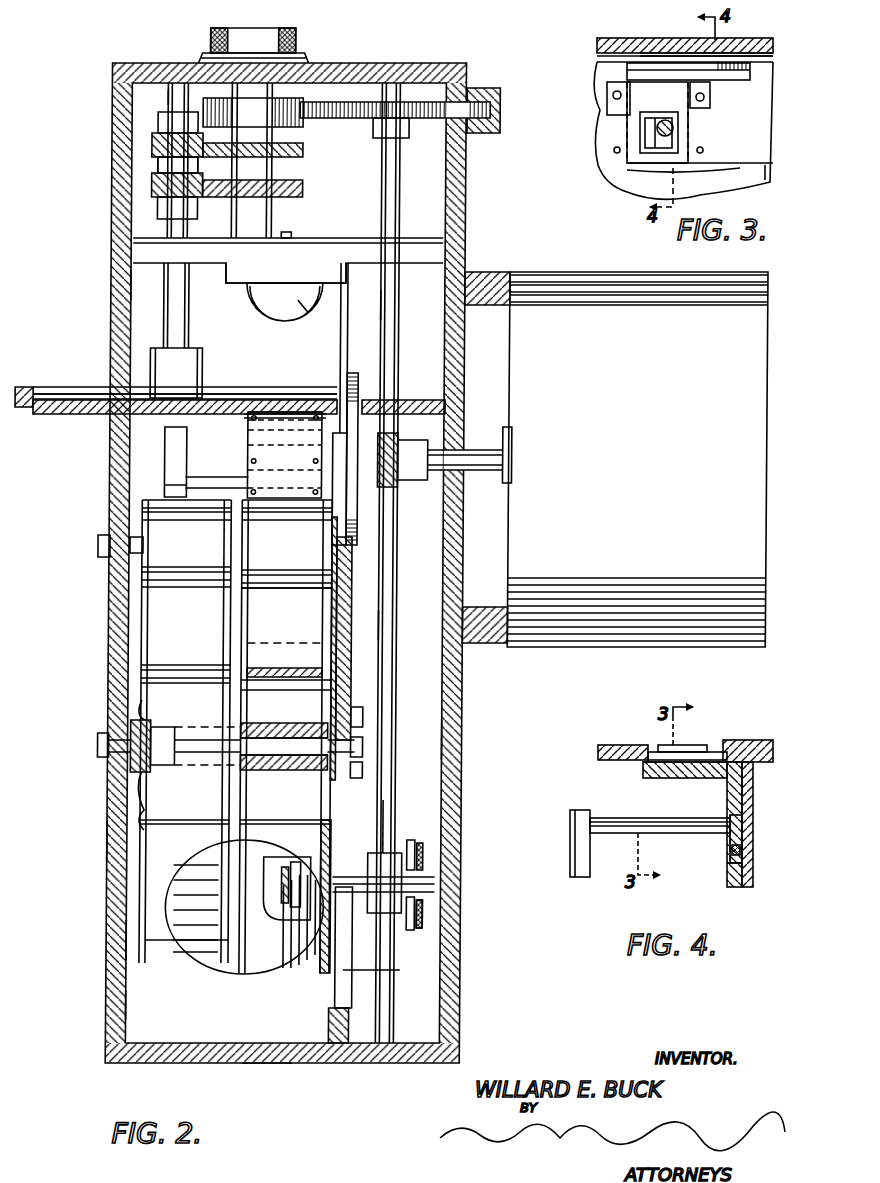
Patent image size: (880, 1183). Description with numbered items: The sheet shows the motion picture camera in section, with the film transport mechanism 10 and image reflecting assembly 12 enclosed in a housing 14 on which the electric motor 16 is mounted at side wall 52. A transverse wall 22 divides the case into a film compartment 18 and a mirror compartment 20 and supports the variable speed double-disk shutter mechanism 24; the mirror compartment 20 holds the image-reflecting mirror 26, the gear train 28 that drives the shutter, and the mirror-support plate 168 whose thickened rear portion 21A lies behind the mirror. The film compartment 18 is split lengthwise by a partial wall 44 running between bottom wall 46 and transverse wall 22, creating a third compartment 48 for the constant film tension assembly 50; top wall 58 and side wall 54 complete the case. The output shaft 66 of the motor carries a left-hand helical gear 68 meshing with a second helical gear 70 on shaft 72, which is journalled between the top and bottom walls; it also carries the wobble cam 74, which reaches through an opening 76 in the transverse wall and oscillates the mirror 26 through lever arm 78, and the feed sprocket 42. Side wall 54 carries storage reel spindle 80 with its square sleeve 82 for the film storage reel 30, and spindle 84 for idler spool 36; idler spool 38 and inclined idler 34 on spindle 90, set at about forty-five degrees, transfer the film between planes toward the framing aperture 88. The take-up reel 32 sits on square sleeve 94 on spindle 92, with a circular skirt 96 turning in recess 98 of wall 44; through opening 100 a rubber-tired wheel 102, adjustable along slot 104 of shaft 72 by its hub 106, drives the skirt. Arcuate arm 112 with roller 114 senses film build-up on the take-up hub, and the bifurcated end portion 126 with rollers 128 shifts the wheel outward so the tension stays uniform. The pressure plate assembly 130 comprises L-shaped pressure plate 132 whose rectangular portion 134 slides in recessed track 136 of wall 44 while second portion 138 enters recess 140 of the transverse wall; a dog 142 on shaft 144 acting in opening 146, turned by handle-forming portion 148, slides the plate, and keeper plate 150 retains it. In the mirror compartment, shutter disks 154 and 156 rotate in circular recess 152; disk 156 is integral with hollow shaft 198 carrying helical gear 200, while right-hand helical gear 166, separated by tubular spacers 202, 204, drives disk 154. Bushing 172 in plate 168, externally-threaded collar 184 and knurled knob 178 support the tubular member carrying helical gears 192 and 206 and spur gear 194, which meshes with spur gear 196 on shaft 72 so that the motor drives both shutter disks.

In FIG. 2, the film transport mechanism 10 is at (210, 978).
In FIG. 2, the image reflecting assembly 12 is at (310, 322).
In FIG. 2, the housing 14 is at (453, 707).
In FIG. 2, the electric motor 16 is at (637, 459).
In FIG. 2, the film compartment 18 is at (147, 1003).
In FIG. 2, the mirror compartment 20 is at (140, 280).
In FIG. 2, the rear portion of mirror-support plate 21A is at (251, 266).
In FIG. 2, the transverse wall 22 is at (422, 400).
In FIG. 3, the transverse wall 22 is at (597, 45).
In FIG. 4, the transverse wall 22 is at (625, 745).
In FIG. 2, the variable speed double-disk shutter mechanism 24 is at (238, 398).
In FIG. 2, the image-reflecting mirror 26 is at (268, 303).
In FIG. 2, the gear train 28 is at (302, 183).
In FIG. 2, the film storage reel 30 is at (147, 934).
In FIG. 2, the take-up reel 32 is at (318, 965).
In FIG. 2, the inclined idler 34 is at (191, 933).
In FIG. 2, the idler spool 36 is at (185, 731).
In FIG. 2, the idler spool 38 is at (285, 736).
In FIG. 2, the feed sprocket 42 is at (253, 438).
In FIG. 2, the partial wall 44 is at (338, 1022).
In FIG. 3, the partial wall 44 is at (763, 168).
In FIG. 4, the partial wall 44 is at (746, 887).
In FIG. 2, the bottom wall 46 is at (270, 1063).
In FIG. 2, the third compartment 48 is at (457, 666).
In FIG. 2, the constant film tension assembly 50 is at (424, 918).
In FIG. 2, the side wall 52 is at (455, 738).
In FIG. 2, the side wall 54 is at (115, 833).
In FIG. 2, the top wall 58 is at (410, 72).
In FIG. 2, the output shaft 66 is at (478, 450).
In FIG. 2, the left-hand helical gear 68 is at (401, 486).
In FIG. 2, the second left-hand helical gear 70 is at (411, 473).
In FIG. 2, the shaft 72 is at (399, 310).
In FIG. 2, the wobble cam 74 is at (358, 519).
In FIG. 2, the opening 76 is at (362, 388).
In FIG. 2, the lever arm 78 is at (346, 333).
In FIG. 2, the storage reel spindle 80 is at (113, 745).
In FIG. 2, the square sleeve 82 is at (134, 734).
In FIG. 2, the spindle 84 is at (133, 542).
In FIG. 3, the framing aperture 88 is at (727, 52).
In FIG. 4, the framing aperture 88 is at (700, 748).
In FIG. 2, the spindle 90 is at (268, 903).
In FIG. 2, the take-up spool spindle 92 is at (264, 745).
In FIG. 2, the sleeve 94 is at (293, 732).
In FIG. 2, the circular skirt 96 is at (334, 614).
In FIG. 2, the recess 98 is at (336, 589).
In FIG. 2, the opening 100 is at (386, 973).
In FIG. 2, the rubber-tired wheel 102 is at (422, 881).
In FIG. 2, the slot 104 is at (386, 810).
In FIG. 2, the hub 106 is at (392, 862).
In FIG. 2, the arcuately-shaped arm 112 is at (288, 878).
In FIG. 2, the roller 114 is at (301, 913).
In FIG. 2, the bifurcated end portion 126 is at (424, 855).
In FIG. 2, the roller 128 is at (418, 840).
In FIG. 3, the pressure plate assembly 130 is at (621, 72).
In FIG. 4, the pressure plate assembly 130 is at (728, 845).
In FIG. 3, the pressure plate 132 is at (630, 122).
In FIG. 4, the pressure plate 132 is at (648, 778).
In FIG. 3, the rectangular portion 134 is at (688, 127).
In FIG. 4, the rectangular portion 134 is at (730, 796).
In FIG. 3, the recessed track 136 is at (625, 172).
In FIG. 4, the recessed track 136 is at (730, 878).
In FIG. 3, the second rectangular portion 138 is at (645, 67).
In FIG. 4, the second rectangular portion 138 is at (672, 778).
In FIG. 2, the recess 140 is at (293, 410).
In FIG. 3, the recess 140 is at (683, 60).
In FIG. 4, the recess 140 is at (655, 748).
In FIG. 3, the dog 142 is at (660, 148).
In FIG. 4, the dog 142 is at (742, 838).
In FIG. 2, the shaft 144 is at (231, 481).
In FIG. 3, the shaft 144 is at (674, 103).
In FIG. 4, the shaft 144 is at (622, 833).
In FIG. 3, the opening 146 is at (643, 140).
In FIG. 4, the opening 146 is at (741, 850).
In FIG. 2, the handle-forming portion 148 is at (174, 450).
In FIG. 4, the handle-forming portion 148 is at (580, 865).
In FIG. 3, the keeper plate 150 is at (710, 90).
In FIG. 4, the keeper plate 150 is at (728, 833).
In FIG. 2, the circular recess 152 is at (31, 408).
In FIG. 2, the shutter disk 154 is at (73, 400).
In FIG. 2, the second shutter disk 156 is at (63, 385).
In FIG. 2, the right-hand helical gear 166 is at (153, 145).
In FIG. 2, the mirror-support plate 168 is at (356, 247).
In FIG. 2, the bushing 172 is at (270, 231).
In FIG. 2, the knurled knob 178 is at (211, 33).
In FIG. 2, the externally-threaded collar 184 is at (238, 90).
In FIG. 2, the left-hand helical gear 192 is at (306, 152).
In FIG. 2, the spur gear 194 is at (289, 106).
In FIG. 2, the second spur gear 196 is at (430, 118).
In FIG. 2, the hollow shaft 198 is at (190, 338).
In FIG. 2, the left-hand helical gear 200 is at (158, 188).
In FIG. 2, the tubular spacer 202 is at (158, 173).
In FIG. 2, the tubular spacer 204 is at (178, 97).
In FIG. 2, the right-hand helical gear 206 is at (306, 193).